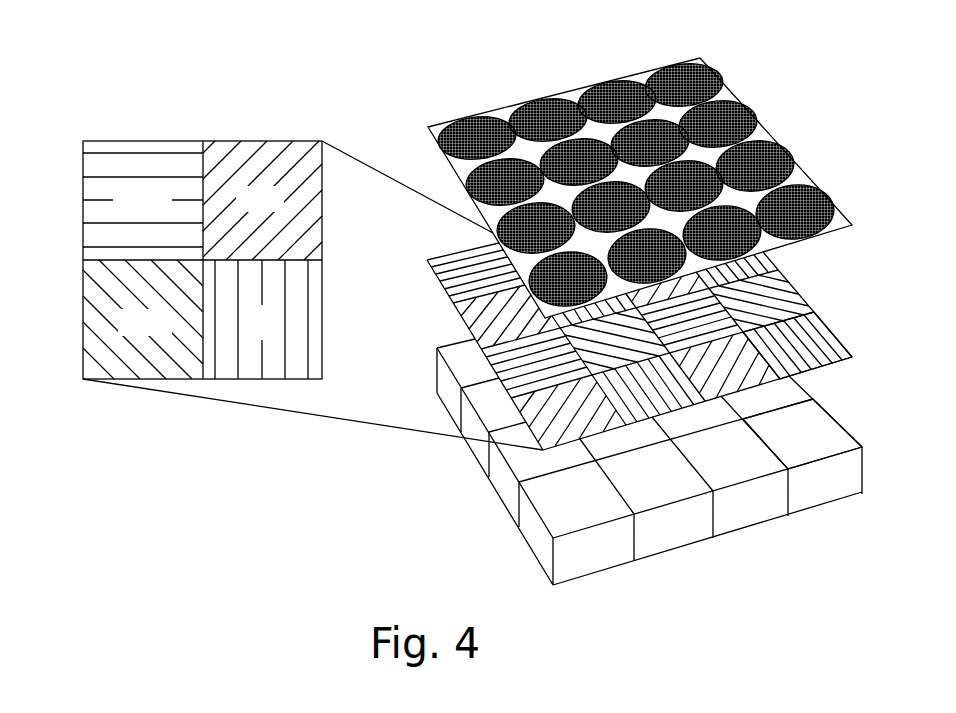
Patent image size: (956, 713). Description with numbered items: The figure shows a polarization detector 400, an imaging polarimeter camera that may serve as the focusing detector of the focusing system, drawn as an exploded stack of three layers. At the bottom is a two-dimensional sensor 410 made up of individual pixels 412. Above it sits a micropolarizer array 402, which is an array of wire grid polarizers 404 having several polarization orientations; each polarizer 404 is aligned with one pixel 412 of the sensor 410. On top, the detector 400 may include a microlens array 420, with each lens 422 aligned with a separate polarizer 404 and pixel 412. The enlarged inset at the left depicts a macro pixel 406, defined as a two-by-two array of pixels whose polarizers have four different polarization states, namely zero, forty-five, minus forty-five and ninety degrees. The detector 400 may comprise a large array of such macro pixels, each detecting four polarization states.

The polarization detector 400 is at (488, 42).
The micropolarizer array 402 is at (677, 346).
The wire grid polarizer 404 is at (822, 337).
The macro pixel 406 is at (123, 94).
The two-dimensional sensor 410 is at (685, 462).
The pixel 412 is at (825, 437).
The microlens array 420 is at (659, 190).
The lens 422 is at (821, 197).